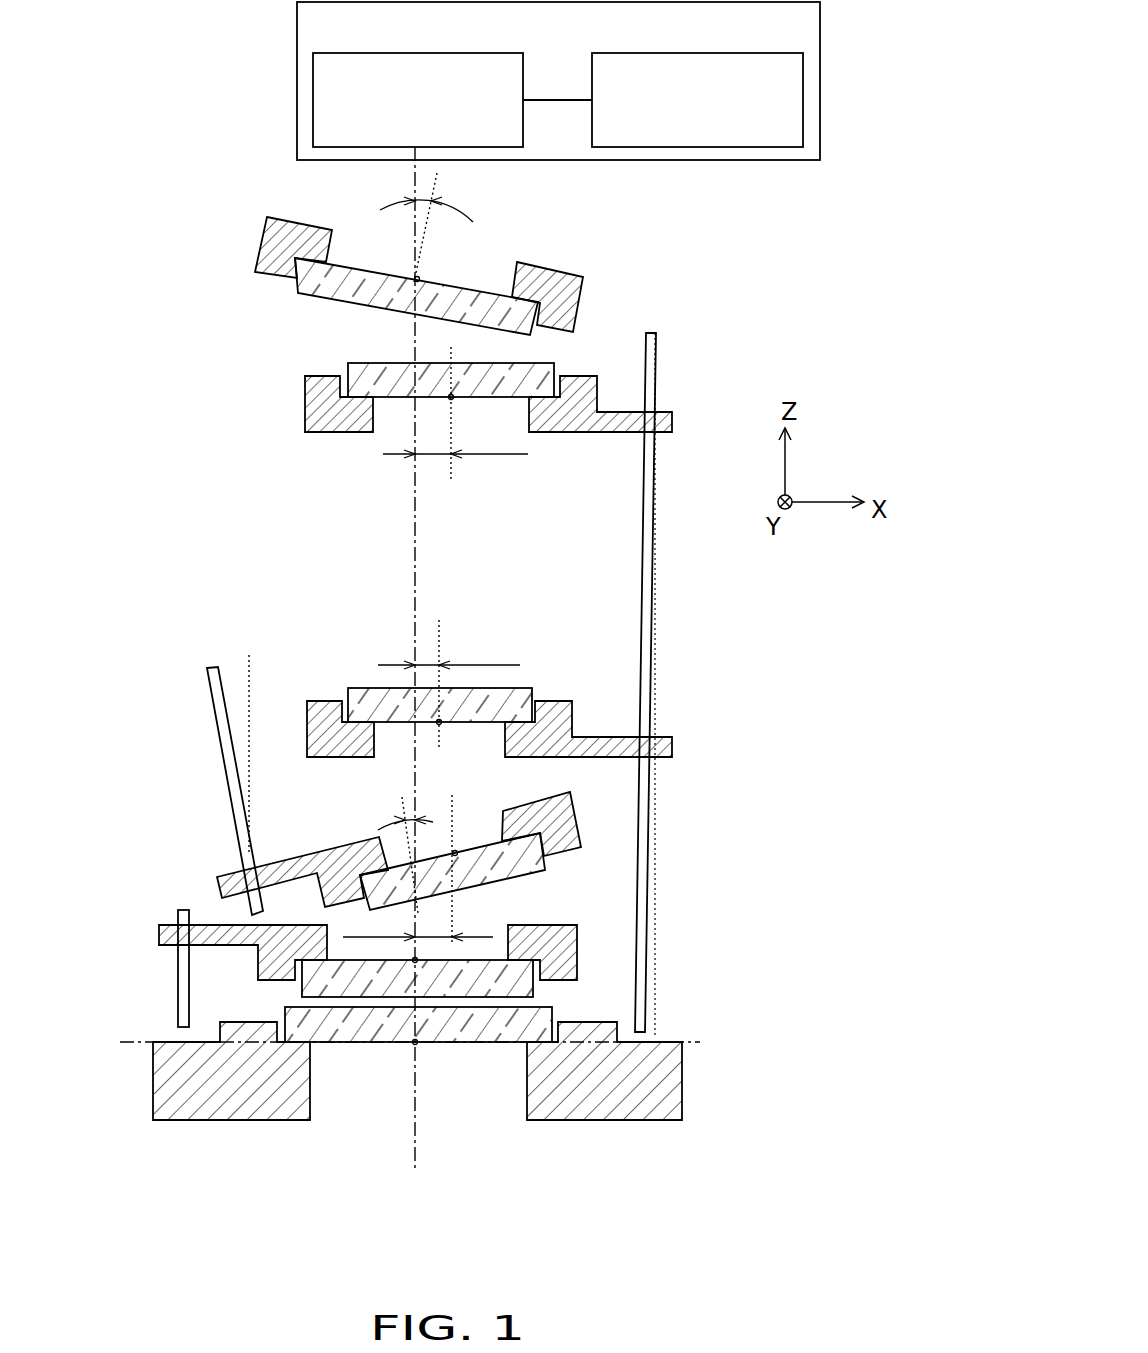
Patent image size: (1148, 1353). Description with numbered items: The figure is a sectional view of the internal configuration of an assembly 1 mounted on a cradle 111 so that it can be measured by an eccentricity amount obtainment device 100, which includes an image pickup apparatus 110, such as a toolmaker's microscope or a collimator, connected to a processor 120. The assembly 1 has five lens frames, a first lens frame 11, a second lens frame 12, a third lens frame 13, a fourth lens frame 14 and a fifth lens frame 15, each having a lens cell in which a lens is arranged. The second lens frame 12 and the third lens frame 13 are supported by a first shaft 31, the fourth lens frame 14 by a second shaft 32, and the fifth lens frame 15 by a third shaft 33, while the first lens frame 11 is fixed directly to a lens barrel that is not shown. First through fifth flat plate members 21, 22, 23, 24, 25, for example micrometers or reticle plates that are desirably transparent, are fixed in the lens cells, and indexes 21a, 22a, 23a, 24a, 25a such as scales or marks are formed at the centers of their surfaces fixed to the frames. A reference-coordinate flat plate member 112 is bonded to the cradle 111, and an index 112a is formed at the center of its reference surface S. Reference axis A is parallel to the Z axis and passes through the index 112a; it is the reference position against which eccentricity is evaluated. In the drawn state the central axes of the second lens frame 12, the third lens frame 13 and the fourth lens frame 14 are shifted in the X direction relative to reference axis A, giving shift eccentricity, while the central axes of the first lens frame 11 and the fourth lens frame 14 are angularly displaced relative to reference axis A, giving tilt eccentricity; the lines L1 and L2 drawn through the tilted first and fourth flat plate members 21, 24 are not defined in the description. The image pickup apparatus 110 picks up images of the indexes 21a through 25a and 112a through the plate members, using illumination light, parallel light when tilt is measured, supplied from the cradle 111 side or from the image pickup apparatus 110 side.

The assembly 1 is at (240, 207).
The first lens frame 11 is at (565, 271).
The second lens frame 12 is at (322, 430).
The third lens frame 13 is at (330, 700).
The fourth lens frame 14 is at (568, 830).
The fifth lens frame 15 is at (578, 942).
The first flat plate member 21 is at (300, 293).
The index 21a is at (421, 279).
The second flat plate member 22 is at (555, 365).
The index 22a is at (453, 399).
The third flat plate member 23 is at (513, 687).
The index 23a is at (440, 724).
The fourth flat plate member 24 is at (546, 868).
The index 24a is at (456, 852).
The fifth flat plate member 25 is at (534, 988).
The index 25a is at (418, 960).
The first shaft 31 is at (648, 580).
The second shaft 32 is at (223, 757).
The third shaft 33 is at (178, 973).
The eccentricity amount obtainment device 100 is at (820, 45).
The image pickup apparatus 110 is at (313, 113).
The cradle 111 is at (682, 1073).
The reference-coordinate flat plate member 112 is at (370, 1028).
The index 112a is at (418, 1045).
The processor 120 is at (804, 118).
The optical axis of first lens L1 is at (422, 242).
The optical axis of fourth lens L2 is at (402, 802).
The reference axis A is at (414, 1105).
The reference surface S is at (137, 1047).